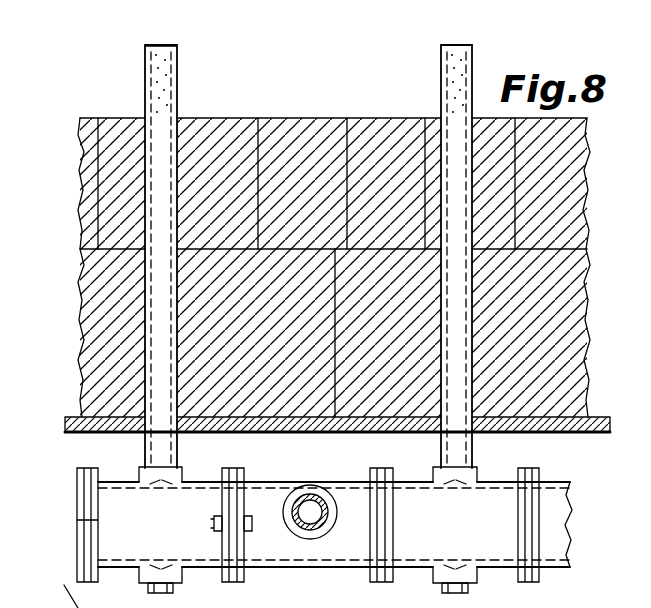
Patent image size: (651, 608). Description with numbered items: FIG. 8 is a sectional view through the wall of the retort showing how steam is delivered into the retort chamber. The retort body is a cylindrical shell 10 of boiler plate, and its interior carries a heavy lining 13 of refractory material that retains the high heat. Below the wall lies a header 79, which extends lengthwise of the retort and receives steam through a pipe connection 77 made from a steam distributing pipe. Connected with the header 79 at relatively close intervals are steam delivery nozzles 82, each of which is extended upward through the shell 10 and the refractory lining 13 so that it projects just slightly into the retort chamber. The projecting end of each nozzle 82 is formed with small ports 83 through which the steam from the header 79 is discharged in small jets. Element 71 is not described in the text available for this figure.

The cylindrical shell 10 is at (572, 433).
The lining 13 is at (566, 226).
The pipe 71 is at (553, 534).
The pipe connection 77 is at (305, 537).
The header 79 is at (348, 554).
The steam delivery nozzle 82 is at (165, 120).
The port 83 is at (176, 76).